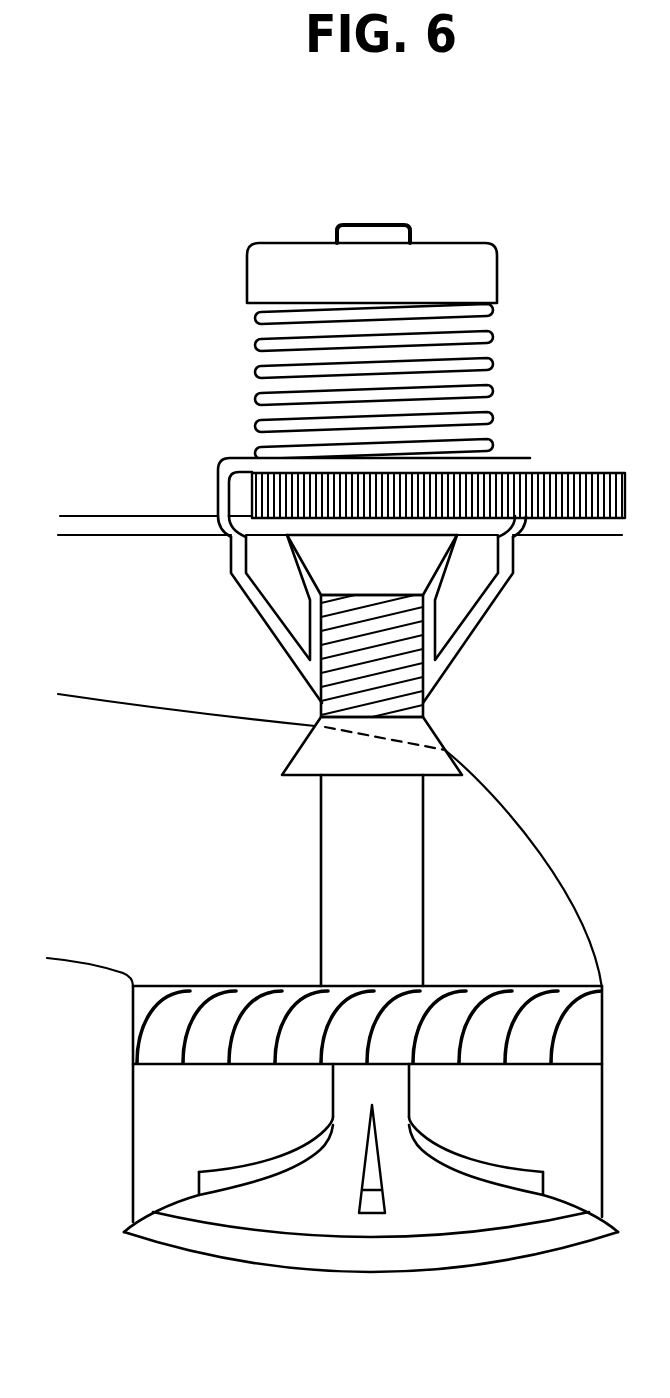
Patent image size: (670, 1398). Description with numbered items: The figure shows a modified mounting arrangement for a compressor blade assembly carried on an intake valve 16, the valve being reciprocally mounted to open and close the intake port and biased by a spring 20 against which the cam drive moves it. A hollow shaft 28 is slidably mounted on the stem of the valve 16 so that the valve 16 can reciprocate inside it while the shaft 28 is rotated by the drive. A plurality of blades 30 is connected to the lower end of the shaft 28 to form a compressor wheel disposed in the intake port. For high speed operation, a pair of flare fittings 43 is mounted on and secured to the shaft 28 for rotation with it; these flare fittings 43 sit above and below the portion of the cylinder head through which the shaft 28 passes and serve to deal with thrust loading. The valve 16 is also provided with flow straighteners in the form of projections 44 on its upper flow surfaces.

The valve 16 is at (187, 1208).
The spring 20 is at (253, 351).
The hollow shaft 28 is at (423, 882).
The blades 30 is at (252, 983).
The flare fittings 43 is at (323, 562).
The projections 44 is at (370, 1208).